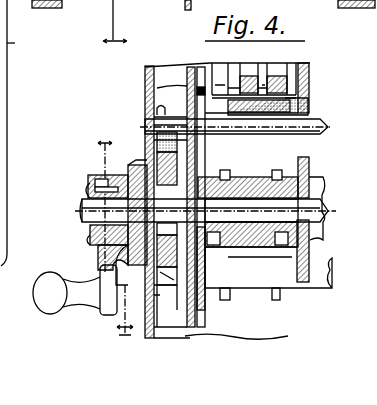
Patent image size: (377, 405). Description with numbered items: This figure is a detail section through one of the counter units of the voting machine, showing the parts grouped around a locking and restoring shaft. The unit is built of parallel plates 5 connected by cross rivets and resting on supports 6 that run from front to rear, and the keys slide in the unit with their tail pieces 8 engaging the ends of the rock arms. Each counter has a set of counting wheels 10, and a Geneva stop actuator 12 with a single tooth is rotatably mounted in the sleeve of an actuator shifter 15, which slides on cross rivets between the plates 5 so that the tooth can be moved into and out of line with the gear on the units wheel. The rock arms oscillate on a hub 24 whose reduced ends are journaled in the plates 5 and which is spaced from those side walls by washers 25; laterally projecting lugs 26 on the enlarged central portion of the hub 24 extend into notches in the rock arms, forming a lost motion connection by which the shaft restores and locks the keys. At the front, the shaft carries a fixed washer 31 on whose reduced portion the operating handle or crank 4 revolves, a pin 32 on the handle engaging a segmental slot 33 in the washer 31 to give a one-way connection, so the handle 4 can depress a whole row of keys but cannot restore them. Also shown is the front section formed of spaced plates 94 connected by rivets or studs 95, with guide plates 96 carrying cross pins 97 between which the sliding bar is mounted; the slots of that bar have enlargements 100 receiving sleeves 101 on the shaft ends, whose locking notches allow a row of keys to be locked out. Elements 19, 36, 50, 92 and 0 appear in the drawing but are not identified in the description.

The operating handle or crank 4 is at (78, 268).
The parallel plates 5 is at (206, 66).
The supports 6 is at (62, 4).
The tail pieces 8 is at (185, 12).
The counting wheels 10 is at (262, 64).
The Geneva stop actuator 12 is at (312, 105).
The actuator shifter 15 is at (270, 154).
The plate 19 is at (330, 126).
The hub 24 is at (281, 244).
The washers 25 is at (310, 169).
The laterally projecting lugs 26 is at (262, 262).
The washer 31 is at (84, 228).
The pin 32 is at (88, 178).
The segmental slot 33 is at (85, 188).
The cam 36 is at (123, 265).
The shaft 50 is at (326, 200).
The lever 92 is at (157, 283).
The plates 94 is at (160, 87).
The rivets or studs 95 is at (236, 327).
The guide plates 96 is at (157, 146).
The cross pins 97 is at (155, 118).
The enlargements 100 is at (167, 265).
The sleeves 101 is at (219, 168).
The bolt 0 is at (290, 280).